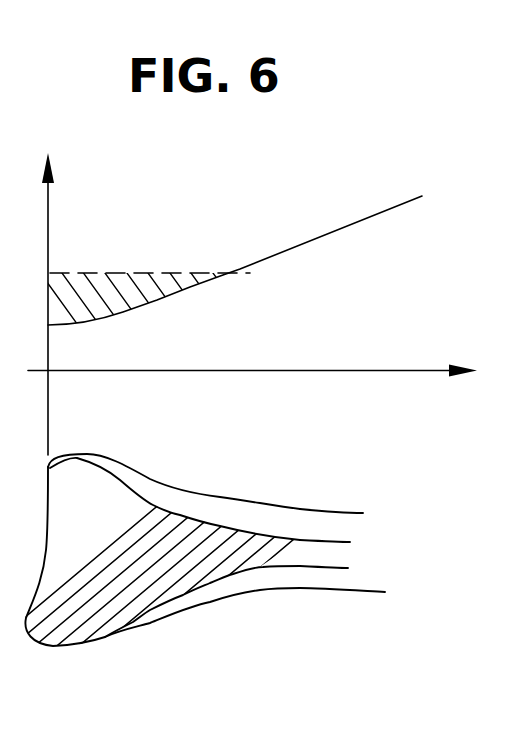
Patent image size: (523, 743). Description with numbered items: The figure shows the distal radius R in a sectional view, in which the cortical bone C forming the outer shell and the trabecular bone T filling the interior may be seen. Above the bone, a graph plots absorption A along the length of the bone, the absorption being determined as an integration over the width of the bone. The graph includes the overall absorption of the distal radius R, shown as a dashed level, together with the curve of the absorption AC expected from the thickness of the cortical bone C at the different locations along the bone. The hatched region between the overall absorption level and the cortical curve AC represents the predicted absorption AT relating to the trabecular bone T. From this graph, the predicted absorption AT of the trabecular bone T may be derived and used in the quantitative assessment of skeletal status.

The absorption A is at (141, 256).
The absorption expected from the thickness of cortical bone AC is at (209, 305).
The predicted absorption of the trabecular bone AT is at (125, 297).
The trabecular bone T is at (105, 603).
The cortical bone C is at (207, 592).
The distal radius R is at (321, 617).